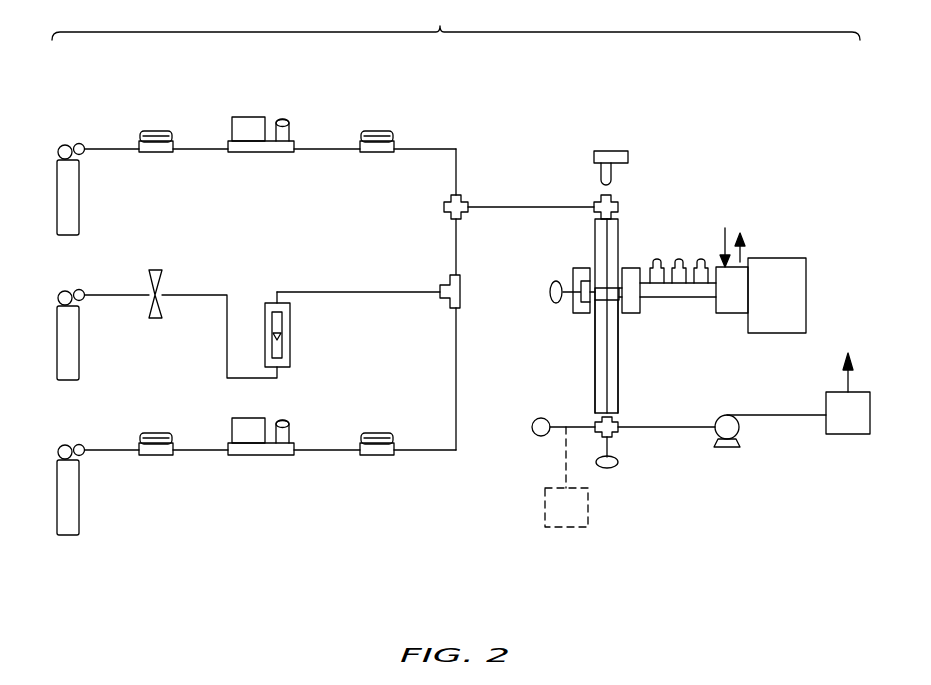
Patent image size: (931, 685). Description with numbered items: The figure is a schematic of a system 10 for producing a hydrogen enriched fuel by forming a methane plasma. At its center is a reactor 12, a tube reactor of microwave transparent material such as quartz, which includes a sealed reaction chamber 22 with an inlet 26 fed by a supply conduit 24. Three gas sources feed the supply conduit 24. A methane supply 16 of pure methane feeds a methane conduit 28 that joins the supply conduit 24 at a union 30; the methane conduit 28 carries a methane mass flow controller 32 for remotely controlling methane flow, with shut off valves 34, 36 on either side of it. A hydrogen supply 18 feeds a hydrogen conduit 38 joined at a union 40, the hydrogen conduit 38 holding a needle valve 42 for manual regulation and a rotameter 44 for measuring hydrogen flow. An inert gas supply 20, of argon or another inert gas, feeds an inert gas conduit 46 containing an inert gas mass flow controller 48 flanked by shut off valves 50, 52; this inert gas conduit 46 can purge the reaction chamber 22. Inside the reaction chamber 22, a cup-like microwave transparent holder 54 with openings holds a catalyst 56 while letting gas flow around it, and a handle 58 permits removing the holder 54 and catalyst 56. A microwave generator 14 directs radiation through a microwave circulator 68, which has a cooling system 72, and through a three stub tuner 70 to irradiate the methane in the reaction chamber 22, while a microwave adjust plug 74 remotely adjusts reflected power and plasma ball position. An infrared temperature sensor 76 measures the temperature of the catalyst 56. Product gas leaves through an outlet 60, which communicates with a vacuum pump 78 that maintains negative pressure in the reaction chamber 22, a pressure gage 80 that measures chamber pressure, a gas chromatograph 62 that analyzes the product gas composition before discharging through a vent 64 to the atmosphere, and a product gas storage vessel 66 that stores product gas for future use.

The system 10 is at (456, 20).
The reactor 12 is at (619, 354).
The microwave generator 14 is at (807, 288).
The methane supply 16 is at (80, 197).
The hydrogen supply 18 is at (80, 345).
The inert gas supply 20 is at (80, 504).
The reaction chamber 22 is at (614, 233).
The supply conduit 24 is at (530, 207).
The inlet 26 is at (619, 200).
The methane conduit 28 is at (427, 149).
The union 30 is at (463, 199).
The methane mass flow controller 32 is at (254, 116).
The shut off valve 34 is at (167, 155).
The shut off valve 36 is at (378, 155).
The hydrogen conduit 38 is at (376, 292).
The union 40 is at (461, 292).
The needle valve 42 is at (162, 283).
The rotameter 44 is at (292, 335).
The inert gas conduit 46 is at (446, 451).
The inert gas mass flow controller 48 is at (265, 458).
The shut off valve 50 is at (167, 458).
The shut off valve 52 is at (378, 458).
The holder 54 is at (604, 303).
The catalyst 56 is at (603, 288).
The handle 58 is at (613, 466).
The outlet 60 is at (618, 433).
The gas chromatograph 62 is at (847, 430).
The vent 64 is at (853, 378).
The product gas storage vessel 66 is at (588, 527).
The microwave circulator 68 is at (735, 315).
The three stub tuner 70 is at (701, 262).
The cooling system 72 is at (725, 228).
The microwave adjust plug 74 is at (576, 266).
The infrared temperature sensor 76 is at (615, 151).
The vacuum pump 78 is at (738, 433).
The pressure gage 80 is at (536, 419).